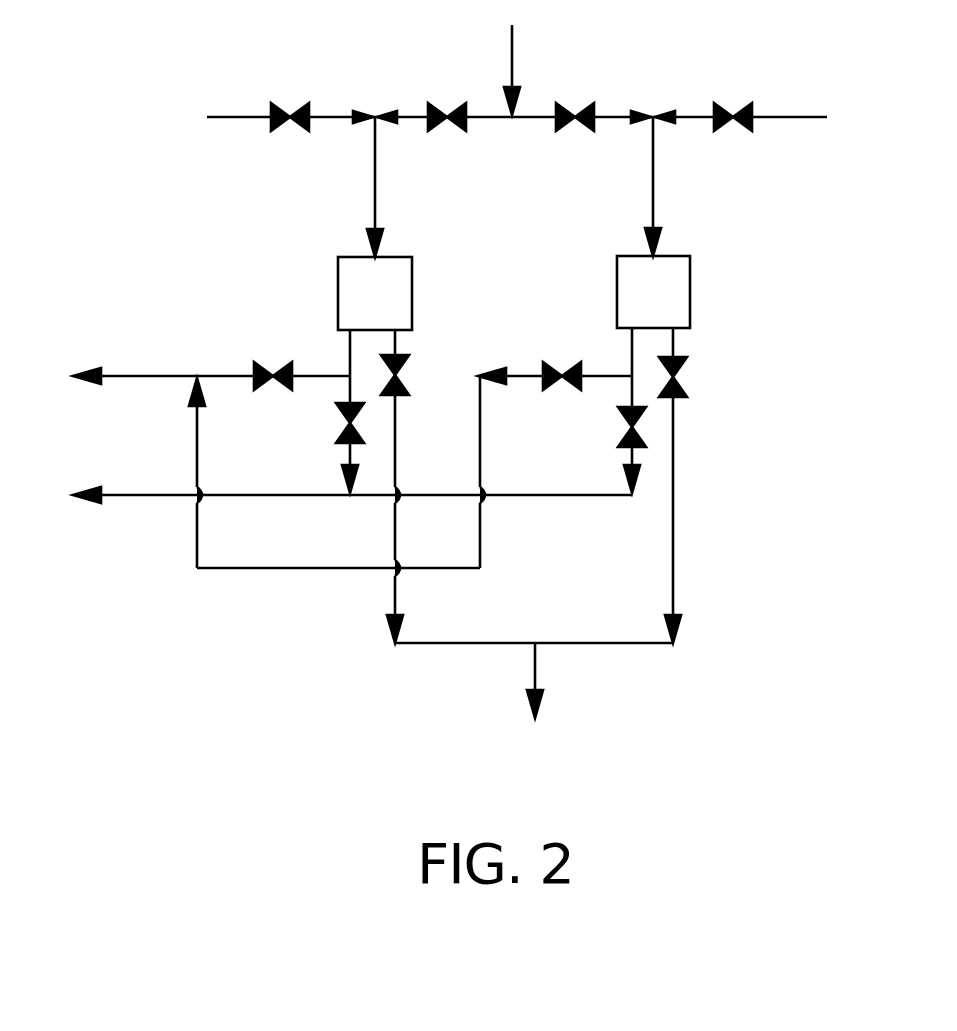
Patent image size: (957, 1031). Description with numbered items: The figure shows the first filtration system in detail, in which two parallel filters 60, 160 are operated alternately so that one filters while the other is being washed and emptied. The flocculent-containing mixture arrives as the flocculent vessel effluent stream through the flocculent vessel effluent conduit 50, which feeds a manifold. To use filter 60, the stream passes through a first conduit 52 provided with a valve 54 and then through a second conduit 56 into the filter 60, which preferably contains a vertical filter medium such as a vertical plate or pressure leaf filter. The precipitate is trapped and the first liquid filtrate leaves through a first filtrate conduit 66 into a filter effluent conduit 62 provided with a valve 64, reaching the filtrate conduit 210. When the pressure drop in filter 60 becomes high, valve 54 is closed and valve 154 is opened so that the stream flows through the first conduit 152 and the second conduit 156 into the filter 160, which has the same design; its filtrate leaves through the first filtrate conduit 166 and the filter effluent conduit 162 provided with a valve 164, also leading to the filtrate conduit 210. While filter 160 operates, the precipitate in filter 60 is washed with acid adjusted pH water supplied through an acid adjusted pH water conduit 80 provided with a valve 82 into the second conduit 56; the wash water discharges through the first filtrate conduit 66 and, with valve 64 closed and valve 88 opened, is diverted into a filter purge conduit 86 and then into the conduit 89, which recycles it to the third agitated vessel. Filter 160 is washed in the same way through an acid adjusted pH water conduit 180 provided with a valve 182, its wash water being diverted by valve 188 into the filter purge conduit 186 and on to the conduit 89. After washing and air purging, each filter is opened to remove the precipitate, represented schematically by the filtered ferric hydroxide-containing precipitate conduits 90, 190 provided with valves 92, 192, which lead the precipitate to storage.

The flocculent vessel effluent conduit 50 is at (539, 62).
The first conduit 52 is at (444, 148).
The valve 54 is at (439, 81).
The second conduit 56 is at (343, 187).
The filter 60 is at (347, 274).
The filter effluent conduit 62 is at (313, 438).
The valve 64 is at (374, 461).
The first filtrate conduit 66 is at (313, 346).
The acid adjusted pH water conduit 80 is at (221, 149).
The valve 82 is at (271, 87).
The filter purge conduit 86 is at (304, 412).
The valve 88 is at (248, 350).
The conduit 89 is at (163, 347).
The filtered ferric hydroxide-containing precipitate conduit 90 is at (424, 519).
The valve 92 is at (426, 366).
The first conduit 152 is at (571, 152).
The valve 154 is at (599, 85).
The second conduit 156 is at (692, 186).
The filter 160 is at (693, 281).
The filter effluent conduit 162 is at (588, 409).
The valve 164 is at (599, 450).
The first filtrate conduit 166 is at (589, 326).
The acid adjusted pH water conduit 180 is at (790, 146).
The valve 182 is at (761, 80).
The filter purge conduit 186 is at (378, 472).
The valve 188 is at (555, 349).
The filtered ferric hydroxide-containing precipitate conduit 190 is at (577, 557).
The valve 192 is at (714, 362).
The filtrate conduit 210 is at (352, 523).